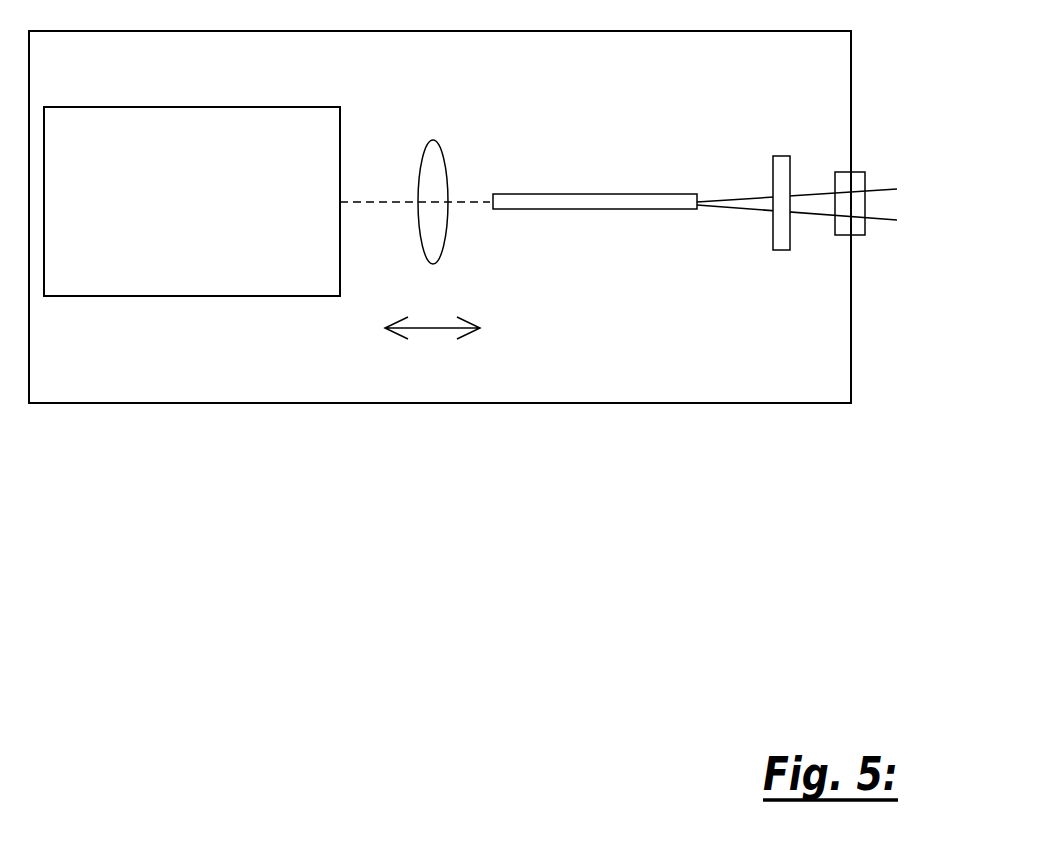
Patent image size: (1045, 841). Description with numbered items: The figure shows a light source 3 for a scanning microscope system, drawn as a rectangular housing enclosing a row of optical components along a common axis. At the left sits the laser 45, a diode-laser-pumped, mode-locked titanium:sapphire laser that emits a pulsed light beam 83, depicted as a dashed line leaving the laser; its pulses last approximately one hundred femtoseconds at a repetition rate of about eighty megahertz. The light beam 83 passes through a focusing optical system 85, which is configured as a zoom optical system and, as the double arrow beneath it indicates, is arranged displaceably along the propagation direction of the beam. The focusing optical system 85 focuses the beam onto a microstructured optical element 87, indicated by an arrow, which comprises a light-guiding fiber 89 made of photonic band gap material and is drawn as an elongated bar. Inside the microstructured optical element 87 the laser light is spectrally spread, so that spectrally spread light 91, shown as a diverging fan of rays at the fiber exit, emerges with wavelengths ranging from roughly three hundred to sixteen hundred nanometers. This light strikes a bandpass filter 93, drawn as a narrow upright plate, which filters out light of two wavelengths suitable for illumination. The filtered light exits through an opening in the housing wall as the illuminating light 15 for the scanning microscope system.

The light source 3 is at (170, 383).
The laser 45 is at (199, 123).
The pulsed light beam 83 is at (352, 200).
The focusing optical system 85 is at (433, 232).
The microstructured optical element 87 is at (601, 235).
The light-guiding fiber 89 is at (593, 200).
The spectrally spread light 91 is at (746, 203).
The bandpass filter 93 is at (781, 172).
The illuminating light 15 is at (883, 203).